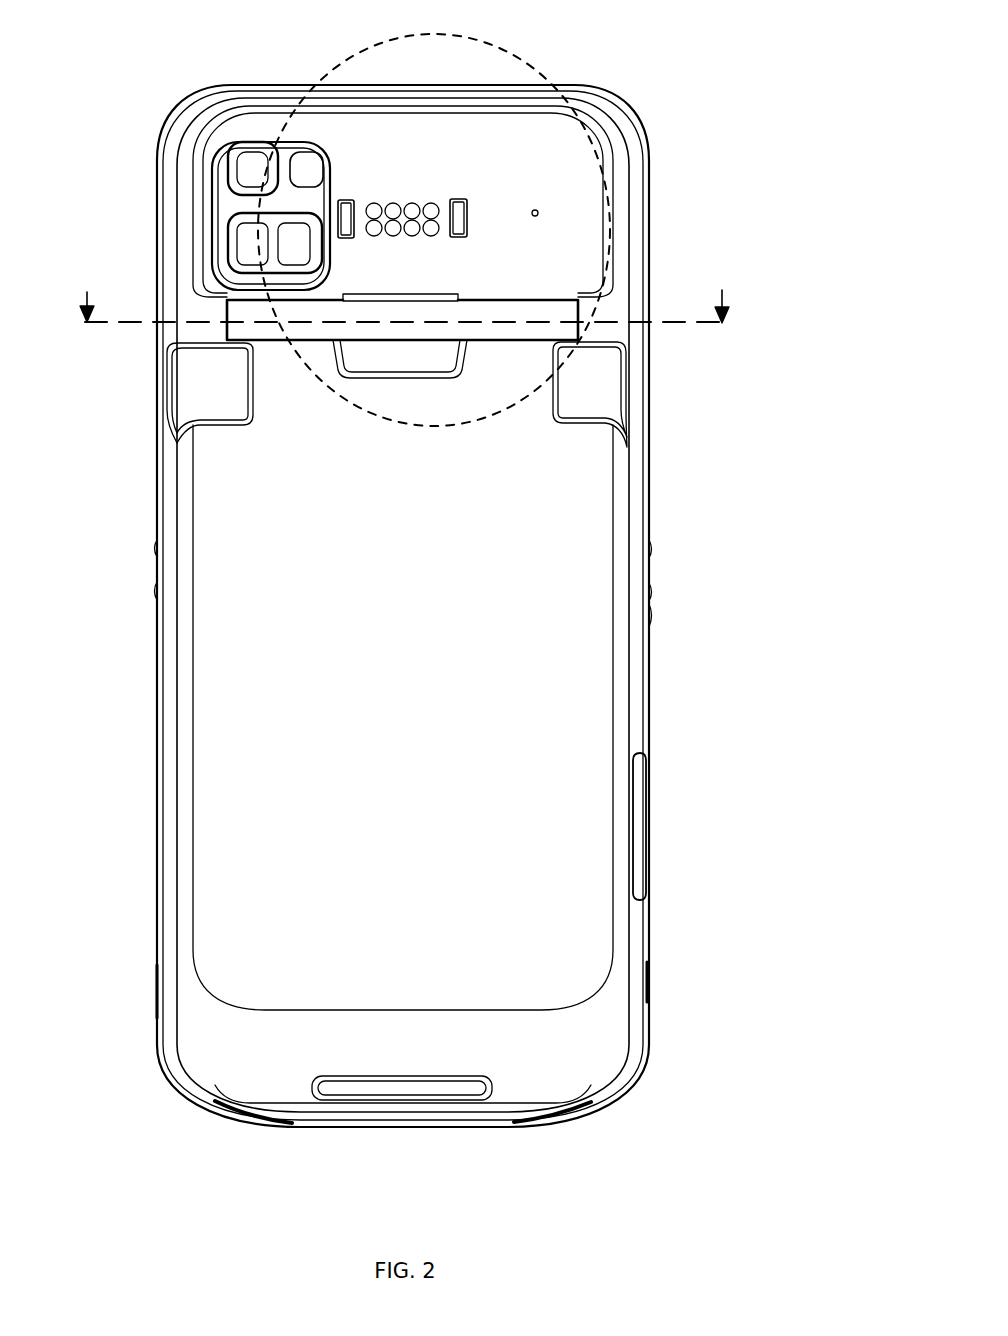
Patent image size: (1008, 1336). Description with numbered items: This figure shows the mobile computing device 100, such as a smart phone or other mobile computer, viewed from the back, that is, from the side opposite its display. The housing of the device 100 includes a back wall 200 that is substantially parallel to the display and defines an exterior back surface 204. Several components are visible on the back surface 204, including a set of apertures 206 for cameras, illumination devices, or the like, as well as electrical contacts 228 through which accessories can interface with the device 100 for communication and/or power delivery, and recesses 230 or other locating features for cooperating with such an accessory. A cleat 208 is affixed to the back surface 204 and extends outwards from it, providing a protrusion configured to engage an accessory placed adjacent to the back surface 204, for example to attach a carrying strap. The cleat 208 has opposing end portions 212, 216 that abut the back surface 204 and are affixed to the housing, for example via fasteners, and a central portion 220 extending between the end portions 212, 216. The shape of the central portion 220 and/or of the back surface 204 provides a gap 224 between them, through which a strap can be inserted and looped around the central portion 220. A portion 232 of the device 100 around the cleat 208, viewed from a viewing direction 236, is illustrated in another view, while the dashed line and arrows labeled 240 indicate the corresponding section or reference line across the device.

The mobile computing device 100 is at (776, 417).
The back wall 200 is at (228, 1026).
The exterior back surface 204 is at (200, 308).
The apertures 206 is at (213, 195).
The cleat 208 is at (562, 308).
The end portion 212 is at (270, 343).
The end portion 216 is at (542, 343).
The central portion 220 is at (405, 332).
The gap 224 is at (435, 352).
The electrical contacts 228 is at (407, 200).
The recesses 230 is at (350, 197).
The portion 232 is at (335, 62).
The viewing direction 236 is at (500, 46).
The section line 240 is at (98, 325).